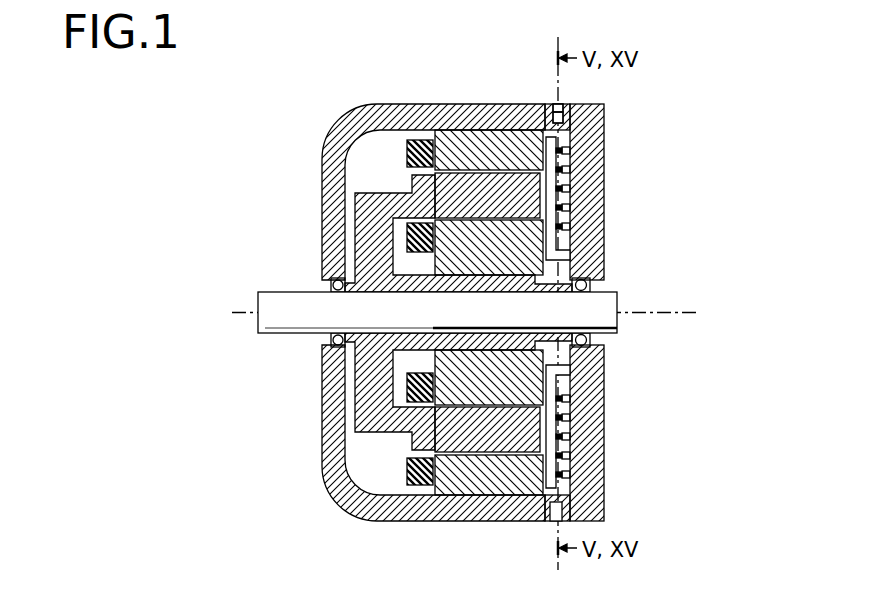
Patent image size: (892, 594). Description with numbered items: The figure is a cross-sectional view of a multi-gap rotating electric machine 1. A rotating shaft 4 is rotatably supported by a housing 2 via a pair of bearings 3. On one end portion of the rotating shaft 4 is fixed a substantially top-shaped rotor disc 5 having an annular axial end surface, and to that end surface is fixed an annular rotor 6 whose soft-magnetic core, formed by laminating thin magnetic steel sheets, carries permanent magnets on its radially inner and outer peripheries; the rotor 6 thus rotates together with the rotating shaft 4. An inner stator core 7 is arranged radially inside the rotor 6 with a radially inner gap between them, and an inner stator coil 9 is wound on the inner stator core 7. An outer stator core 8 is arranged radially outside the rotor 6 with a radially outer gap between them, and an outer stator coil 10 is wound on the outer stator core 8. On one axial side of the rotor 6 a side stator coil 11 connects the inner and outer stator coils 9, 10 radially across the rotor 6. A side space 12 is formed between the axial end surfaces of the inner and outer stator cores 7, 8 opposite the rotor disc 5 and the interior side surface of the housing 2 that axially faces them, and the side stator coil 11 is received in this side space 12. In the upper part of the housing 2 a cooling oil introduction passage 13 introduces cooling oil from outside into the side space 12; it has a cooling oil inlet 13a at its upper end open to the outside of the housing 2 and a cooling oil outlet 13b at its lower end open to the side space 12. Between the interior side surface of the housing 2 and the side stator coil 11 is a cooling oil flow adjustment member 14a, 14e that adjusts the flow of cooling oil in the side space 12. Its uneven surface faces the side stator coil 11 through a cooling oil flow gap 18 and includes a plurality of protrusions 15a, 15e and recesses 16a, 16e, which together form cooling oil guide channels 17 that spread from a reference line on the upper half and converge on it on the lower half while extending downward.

The multi-gap rotating electric machine 1 is at (293, 110).
The housing 2 is at (603, 380).
The bearings 3 is at (590, 340).
The rotating shaft 4 is at (530, 303).
The rotor disc 5 is at (378, 267).
The annular rotor 6 is at (513, 203).
The inner stator core 7 is at (583, 266).
The outer stator core 8 is at (503, 487).
The inner stator coil 9 is at (417, 385).
The outer stator coil 10 is at (403, 470).
The side stator coil 11 is at (548, 223).
The side space 12 is at (543, 106).
The cooling oil introduction passage 13 is at (566, 118).
The cooling oil inlet 13a is at (562, 105).
The cooling oil outlet 13b is at (562, 128).
The cooling oil flow adjustment member 14a is at (578, 403).
The cooling oil flow adjustment member 14e is at (566, 312).
The protrusion 15a is at (578, 428).
The protrusion 15e is at (559, 312).
The recess 16a is at (578, 442).
The recess 16e is at (563, 312).
The cooling oil guide channels 17 is at (563, 312).
The cooling oil flow gap 18 is at (566, 488).